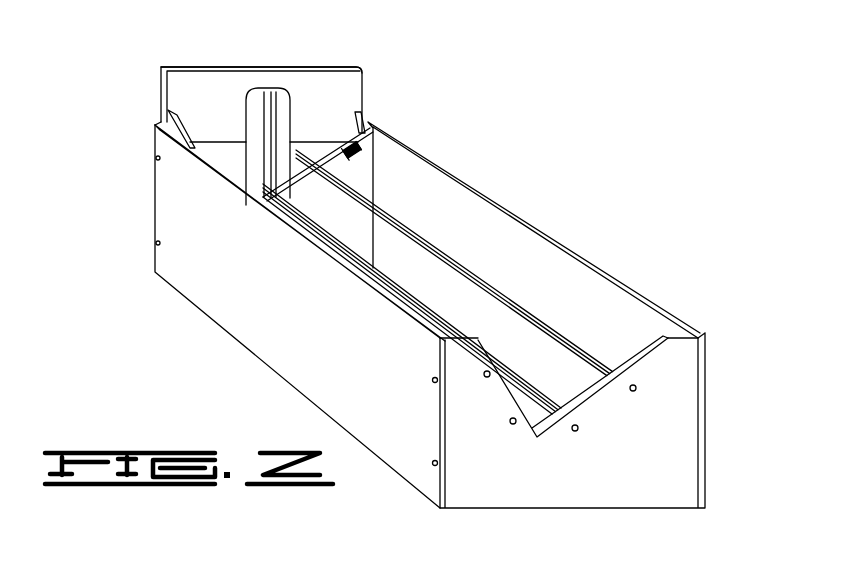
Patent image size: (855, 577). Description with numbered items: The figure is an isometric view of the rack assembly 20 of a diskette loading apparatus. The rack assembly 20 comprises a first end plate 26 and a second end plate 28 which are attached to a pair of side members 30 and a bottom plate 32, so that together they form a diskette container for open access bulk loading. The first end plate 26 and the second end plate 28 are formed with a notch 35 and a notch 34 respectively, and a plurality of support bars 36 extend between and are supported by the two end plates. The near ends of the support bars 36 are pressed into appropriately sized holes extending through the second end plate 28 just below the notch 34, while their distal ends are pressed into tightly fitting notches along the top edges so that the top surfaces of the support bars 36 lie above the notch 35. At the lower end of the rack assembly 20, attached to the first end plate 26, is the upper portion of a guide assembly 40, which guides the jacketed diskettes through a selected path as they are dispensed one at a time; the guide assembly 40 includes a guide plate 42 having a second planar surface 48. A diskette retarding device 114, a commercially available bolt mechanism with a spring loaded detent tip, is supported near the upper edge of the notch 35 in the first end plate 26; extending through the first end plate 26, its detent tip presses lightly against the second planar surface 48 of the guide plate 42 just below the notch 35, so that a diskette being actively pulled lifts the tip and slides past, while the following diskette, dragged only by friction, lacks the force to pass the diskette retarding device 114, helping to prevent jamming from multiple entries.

The rack assembly 20 is at (418, 268).
The first end plate 26 is at (362, 175).
The second end plate 28 is at (688, 405).
The side members 30 is at (238, 315).
The bottom plate 32 is at (385, 280).
The notch 34 is at (633, 366).
The notch 35 is at (320, 155).
The support bars 36 is at (473, 272).
The guide assembly 40 is at (155, 105).
The guide plate 42 is at (253, 67).
The second planar surface 48 is at (357, 97).
The diskette retarding device 114 is at (350, 158).